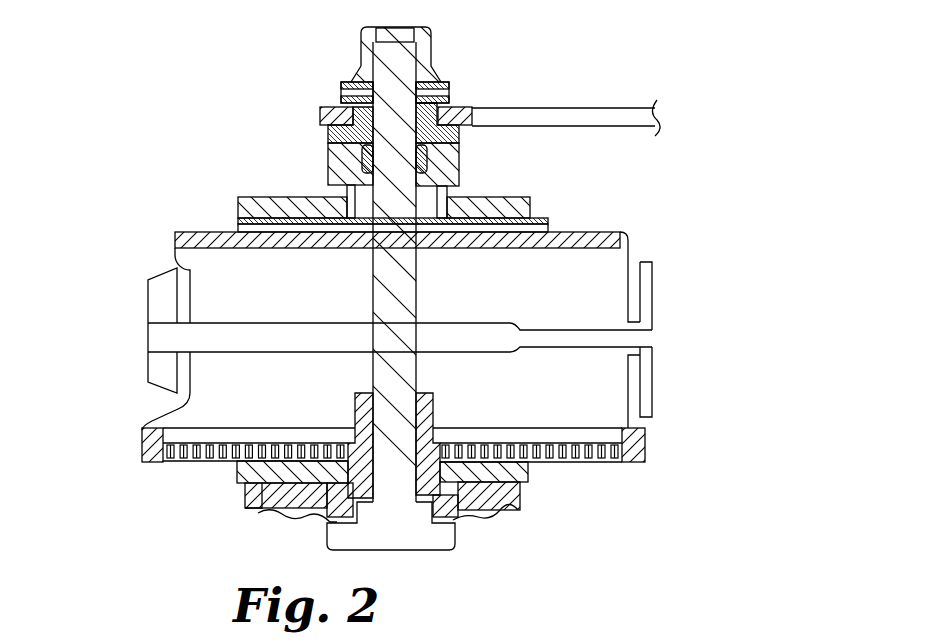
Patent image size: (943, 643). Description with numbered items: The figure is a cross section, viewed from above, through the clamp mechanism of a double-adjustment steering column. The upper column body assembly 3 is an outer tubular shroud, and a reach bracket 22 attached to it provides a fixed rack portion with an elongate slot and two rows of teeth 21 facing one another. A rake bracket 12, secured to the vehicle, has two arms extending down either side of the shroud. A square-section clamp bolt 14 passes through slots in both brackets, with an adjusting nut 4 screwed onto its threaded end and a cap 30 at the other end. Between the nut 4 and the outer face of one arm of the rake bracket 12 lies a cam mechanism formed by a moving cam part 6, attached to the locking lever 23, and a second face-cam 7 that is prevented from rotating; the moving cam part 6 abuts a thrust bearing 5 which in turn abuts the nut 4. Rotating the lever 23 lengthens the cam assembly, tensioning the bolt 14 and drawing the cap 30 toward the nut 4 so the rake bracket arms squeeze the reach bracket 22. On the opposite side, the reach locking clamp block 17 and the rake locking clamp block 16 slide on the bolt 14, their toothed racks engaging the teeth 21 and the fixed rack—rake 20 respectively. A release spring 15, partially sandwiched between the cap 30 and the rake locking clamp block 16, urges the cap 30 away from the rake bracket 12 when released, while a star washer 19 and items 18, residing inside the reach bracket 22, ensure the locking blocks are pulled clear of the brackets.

The upper column body assembly 3 is at (147, 281).
The adjusting nut 4 is at (359, 59).
The thrust bearing 5 is at (338, 90).
The moving cam part 6 is at (326, 133).
The fixed face-cam 7 is at (327, 166).
The rake bracket 12 is at (237, 206).
The clamp bolt 14 is at (371, 370).
The release spring 15 is at (473, 522).
The rake locking clamp block 16 is at (443, 505).
The reach locking clamp block 17 is at (443, 473).
The items 18 is at (437, 425).
The star washer 19 is at (437, 393).
The fixed rack—rake 20 is at (257, 502).
The rows of teeth 21 is at (180, 461).
The reach bracket 22 is at (578, 225).
The locking lever 23 is at (577, 105).
The cap 30 is at (420, 552).